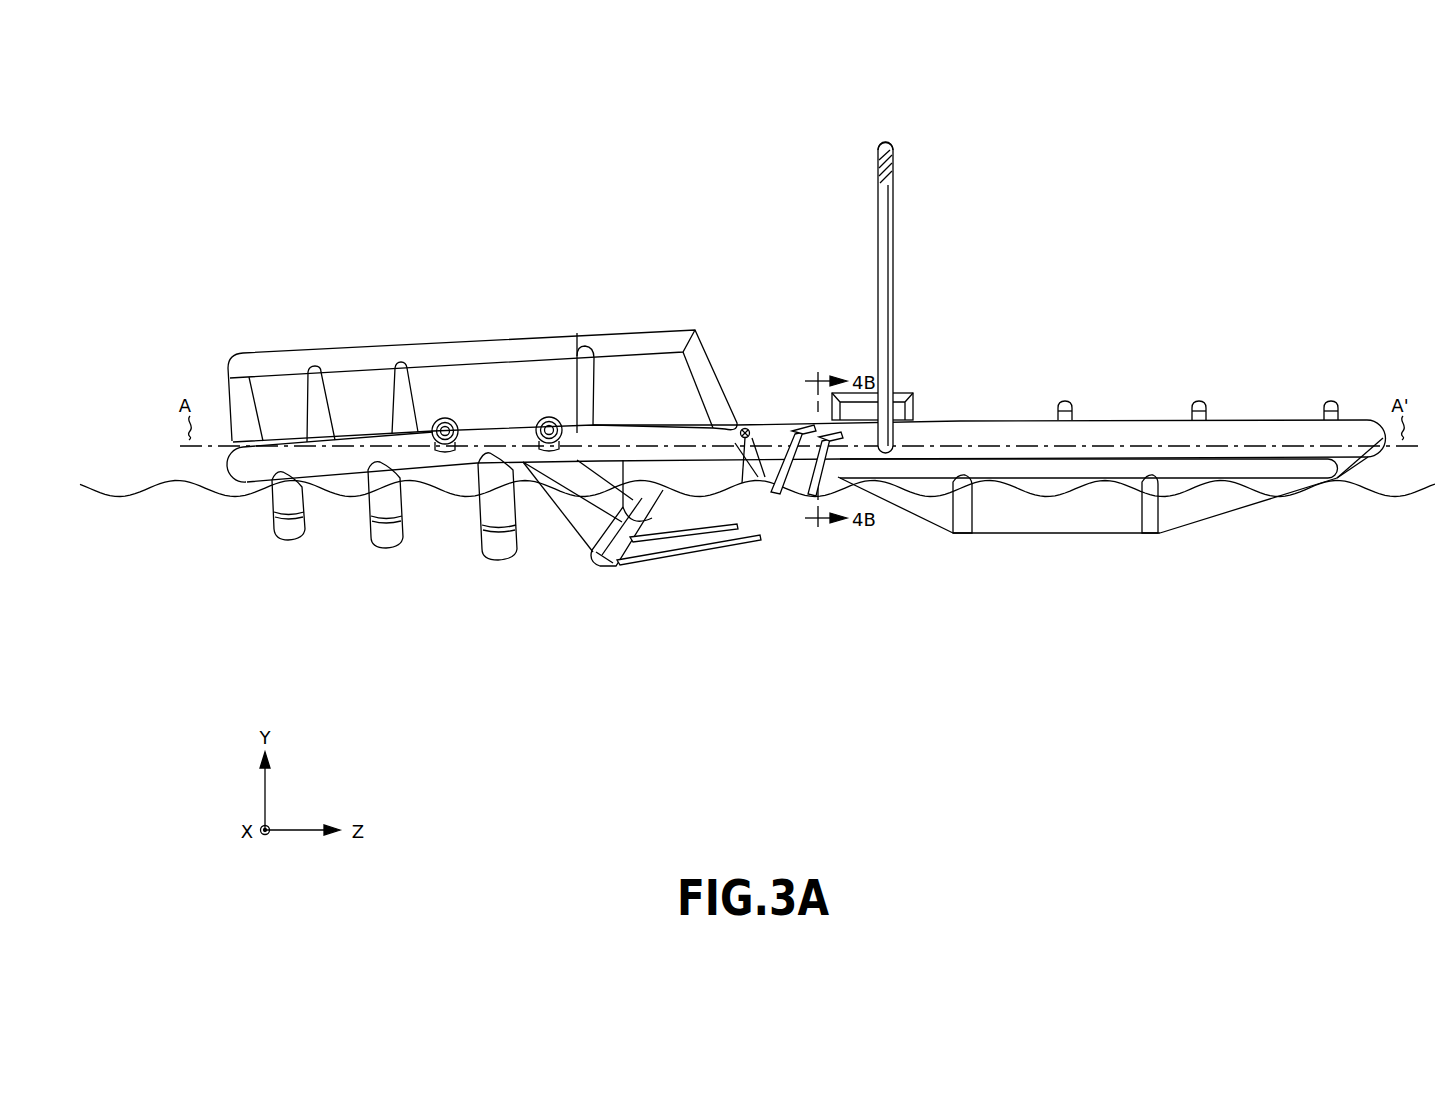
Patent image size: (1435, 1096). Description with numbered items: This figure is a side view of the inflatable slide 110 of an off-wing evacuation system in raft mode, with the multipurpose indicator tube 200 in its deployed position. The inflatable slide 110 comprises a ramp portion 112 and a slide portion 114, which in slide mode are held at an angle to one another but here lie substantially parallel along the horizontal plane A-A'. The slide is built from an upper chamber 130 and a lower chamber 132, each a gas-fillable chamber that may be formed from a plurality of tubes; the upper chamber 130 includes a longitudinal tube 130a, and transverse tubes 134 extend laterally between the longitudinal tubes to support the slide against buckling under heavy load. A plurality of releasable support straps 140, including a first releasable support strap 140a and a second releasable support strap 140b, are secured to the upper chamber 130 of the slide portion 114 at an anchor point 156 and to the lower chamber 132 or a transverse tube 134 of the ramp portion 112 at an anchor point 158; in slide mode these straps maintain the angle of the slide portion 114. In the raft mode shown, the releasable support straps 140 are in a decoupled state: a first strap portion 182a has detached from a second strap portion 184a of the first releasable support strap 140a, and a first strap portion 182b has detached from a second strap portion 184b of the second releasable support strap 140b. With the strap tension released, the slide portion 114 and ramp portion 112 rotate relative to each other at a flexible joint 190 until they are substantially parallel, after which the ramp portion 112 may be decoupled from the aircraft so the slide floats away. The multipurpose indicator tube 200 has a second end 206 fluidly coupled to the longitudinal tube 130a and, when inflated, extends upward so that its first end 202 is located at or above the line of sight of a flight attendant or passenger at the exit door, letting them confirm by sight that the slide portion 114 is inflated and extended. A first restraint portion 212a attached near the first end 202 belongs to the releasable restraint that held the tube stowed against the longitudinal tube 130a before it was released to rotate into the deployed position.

The inflatable slide 110 is at (200, 225).
The ramp portion 112 is at (750, 105).
The slide portion 114 is at (1378, 105).
The upper chamber 130 is at (592, 442).
The longitudinal tube 130a is at (1222, 436).
The lower chamber 132 is at (1067, 472).
The transverse tube 134 is at (1148, 522).
The releasable support straps 140 is at (772, 756).
The first releasable support strap 140a is at (717, 545).
The second releasable support strap 140b is at (693, 568).
The anchor point 156 is at (790, 427).
The anchor point 158 is at (600, 563).
The first strap portion 182a is at (771, 497).
The first strap portion 182b is at (809, 497).
The second strap portion 184a is at (667, 533).
The second strap portion 184b is at (637, 565).
The flexible joint 190 is at (768, 437).
The multipurpose indicator tube 200 is at (877, 328).
The first end 202 is at (884, 140).
The second end 206 is at (898, 440).
The first restraint portion 212a is at (881, 142).